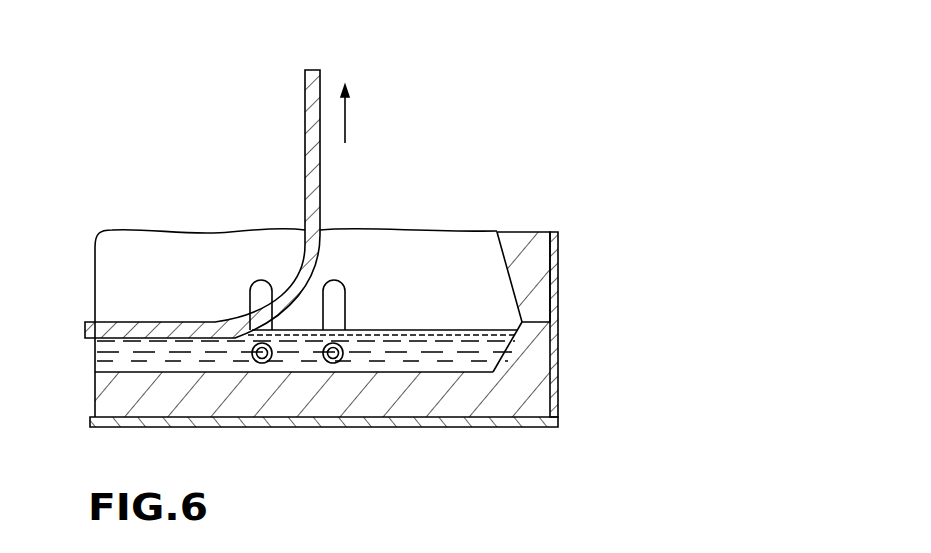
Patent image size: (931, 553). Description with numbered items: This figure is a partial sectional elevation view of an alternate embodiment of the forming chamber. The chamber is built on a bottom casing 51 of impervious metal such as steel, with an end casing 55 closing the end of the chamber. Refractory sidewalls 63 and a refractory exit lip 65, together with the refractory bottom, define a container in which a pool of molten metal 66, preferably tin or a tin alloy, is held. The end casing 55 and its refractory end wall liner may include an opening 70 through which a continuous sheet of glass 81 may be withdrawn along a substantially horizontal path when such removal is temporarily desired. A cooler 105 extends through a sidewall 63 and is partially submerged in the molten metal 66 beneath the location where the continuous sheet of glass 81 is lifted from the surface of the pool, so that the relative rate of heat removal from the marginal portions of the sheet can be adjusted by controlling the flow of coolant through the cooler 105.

The bottom casing 51 is at (557, 425).
The end casing 55 is at (559, 250).
The refractory sidewalls 63 is at (105, 395).
The refractory exit lip 65 is at (537, 351).
The pool of molten metal 66 is at (100, 352).
The opening 70 is at (533, 265).
The continuous sheet of glass 81 is at (305, 148).
The cooler 105 is at (347, 311).